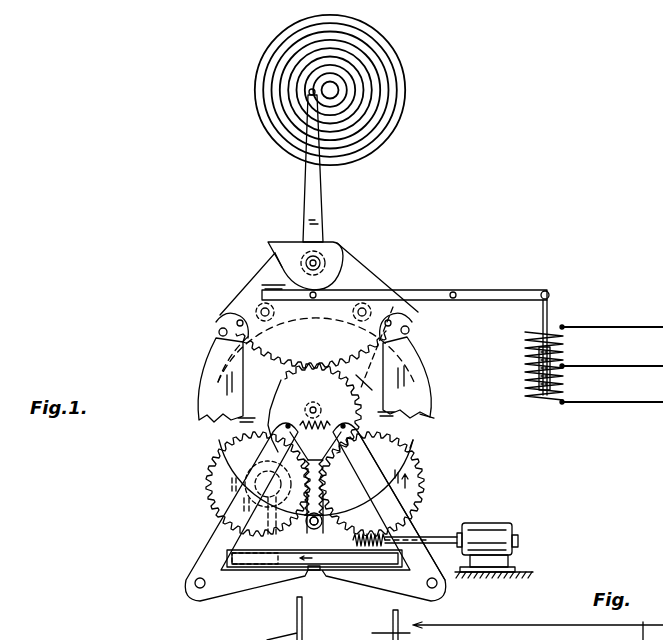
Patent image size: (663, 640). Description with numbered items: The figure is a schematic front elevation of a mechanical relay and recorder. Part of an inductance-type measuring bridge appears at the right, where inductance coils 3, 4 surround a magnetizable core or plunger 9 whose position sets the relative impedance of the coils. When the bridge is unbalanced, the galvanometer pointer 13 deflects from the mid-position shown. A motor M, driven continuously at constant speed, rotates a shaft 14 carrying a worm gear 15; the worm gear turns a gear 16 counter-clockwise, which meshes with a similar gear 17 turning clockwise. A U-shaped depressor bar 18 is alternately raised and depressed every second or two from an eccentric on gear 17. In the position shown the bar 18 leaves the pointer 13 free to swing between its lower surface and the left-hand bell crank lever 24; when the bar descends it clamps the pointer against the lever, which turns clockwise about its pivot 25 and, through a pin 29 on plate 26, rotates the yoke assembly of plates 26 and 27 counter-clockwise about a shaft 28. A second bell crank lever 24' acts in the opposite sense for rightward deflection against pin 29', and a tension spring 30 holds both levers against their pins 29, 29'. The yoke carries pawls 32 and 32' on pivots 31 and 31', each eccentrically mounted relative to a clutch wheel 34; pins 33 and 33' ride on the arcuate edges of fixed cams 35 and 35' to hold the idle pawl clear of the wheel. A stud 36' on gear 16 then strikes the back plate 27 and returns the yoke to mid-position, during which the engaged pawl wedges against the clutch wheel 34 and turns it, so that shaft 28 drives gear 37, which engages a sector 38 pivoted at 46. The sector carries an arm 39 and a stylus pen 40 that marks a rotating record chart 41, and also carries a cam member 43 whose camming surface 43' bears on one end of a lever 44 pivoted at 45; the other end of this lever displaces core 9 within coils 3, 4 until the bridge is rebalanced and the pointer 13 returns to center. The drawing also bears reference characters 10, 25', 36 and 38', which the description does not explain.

The inductance coil 3 is at (550, 385).
The inductance coil 4 is at (550, 348).
The core or plunger 9 is at (538, 352).
The contact wire 10 is at (617, 366).
The pointer or needle 13 is at (317, 571).
The shaft 14 is at (437, 537).
The worm gear 15 is at (353, 540).
The gear 16 is at (412, 484).
The gear 17 is at (232, 472).
The U-shaped depressor bar 18 is at (360, 562).
The bell crank lever 24 is at (315, 527).
The bell crank lever 24' is at (408, 528).
The pivot 25 is at (189, 609).
The pivot 25' is at (461, 592).
The plate 26 is at (380, 385).
The plate 27 is at (240, 387).
The shaft 28 is at (311, 407).
The pin 29 is at (291, 417).
The pin 29' is at (378, 459).
The tension spring 30 is at (340, 413).
The pivot 31 is at (228, 296).
The pivot 31' is at (408, 293).
The pawl 32 is at (223, 303).
The pawl 32' is at (423, 316).
The pin 33 is at (194, 339).
The pin 33' is at (459, 338).
The clutch wheel 34 is at (440, 410).
The fixed member or cam 35 is at (201, 380).
The fixed member or cam 35' is at (438, 377).
The pinion 36 is at (240, 500).
The stud or pin 36' is at (347, 516).
The gear 37 is at (345, 383).
The sector 38 is at (319, 274).
The escape wheel 38' is at (311, 348).
The arm 39 is at (318, 191).
The marker or stylus pen 40 is at (309, 95).
The record sheet or chart 41 is at (401, 119).
The cam member 43 is at (271, 245).
The camming surface 43' is at (253, 245).
The lever 44 is at (392, 297).
The pivot 45 is at (455, 290).
The pivot 46 is at (320, 262).
The motor M is at (493, 523).